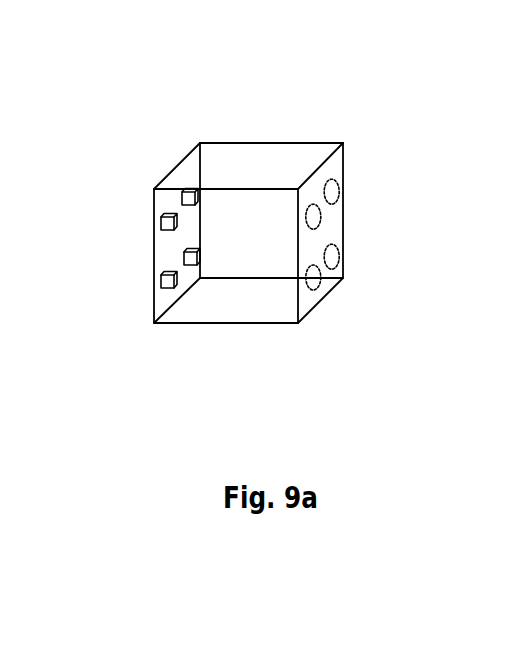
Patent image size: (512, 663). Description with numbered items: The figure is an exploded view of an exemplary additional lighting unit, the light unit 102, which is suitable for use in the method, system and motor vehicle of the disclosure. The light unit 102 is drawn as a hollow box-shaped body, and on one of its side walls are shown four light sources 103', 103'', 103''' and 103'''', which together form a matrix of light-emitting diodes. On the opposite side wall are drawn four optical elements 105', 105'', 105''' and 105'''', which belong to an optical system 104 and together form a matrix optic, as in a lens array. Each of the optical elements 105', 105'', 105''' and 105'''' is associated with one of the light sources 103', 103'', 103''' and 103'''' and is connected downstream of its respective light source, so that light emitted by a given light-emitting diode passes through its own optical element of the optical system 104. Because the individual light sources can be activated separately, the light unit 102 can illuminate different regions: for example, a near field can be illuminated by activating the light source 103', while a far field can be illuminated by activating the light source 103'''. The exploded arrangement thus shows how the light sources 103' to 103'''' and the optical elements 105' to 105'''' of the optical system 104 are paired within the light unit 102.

The light unit 102 is at (280, 367).
The optical system 104 is at (348, 135).
The light source 103' is at (116, 180).
The light source 103'' is at (162, 151).
The light source 103''' is at (112, 243).
The light source 103'''' is at (156, 321).
The optical element 105' is at (374, 223).
The optical element 105'' is at (385, 174).
The optical element 105''' is at (370, 305).
The optical element 105'''' is at (395, 270).